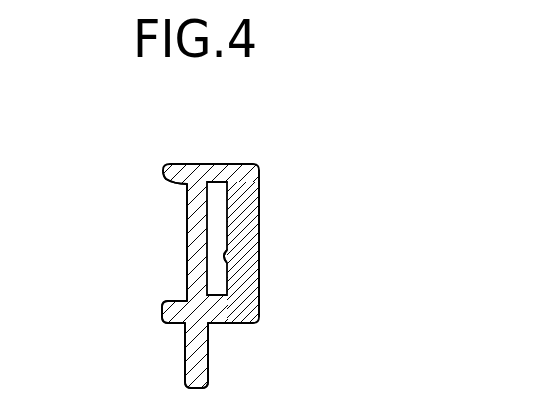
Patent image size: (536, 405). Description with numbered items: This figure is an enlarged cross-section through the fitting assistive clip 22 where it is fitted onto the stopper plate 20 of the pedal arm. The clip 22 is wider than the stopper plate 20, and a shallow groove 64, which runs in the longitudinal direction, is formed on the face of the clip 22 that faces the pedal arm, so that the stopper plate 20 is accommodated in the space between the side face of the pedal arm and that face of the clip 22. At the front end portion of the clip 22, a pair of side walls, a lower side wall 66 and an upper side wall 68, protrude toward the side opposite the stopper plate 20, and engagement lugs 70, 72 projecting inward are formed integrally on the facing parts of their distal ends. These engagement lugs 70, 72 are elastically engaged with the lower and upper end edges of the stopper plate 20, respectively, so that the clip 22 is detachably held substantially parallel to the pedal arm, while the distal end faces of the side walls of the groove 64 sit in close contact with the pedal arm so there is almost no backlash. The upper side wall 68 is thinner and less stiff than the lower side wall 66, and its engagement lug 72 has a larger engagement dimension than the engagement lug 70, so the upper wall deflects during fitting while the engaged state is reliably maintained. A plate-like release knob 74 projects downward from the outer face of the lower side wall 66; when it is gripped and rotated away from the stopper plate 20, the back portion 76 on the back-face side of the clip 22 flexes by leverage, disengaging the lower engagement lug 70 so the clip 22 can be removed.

The stopper plate 20 is at (187, 241).
The fitting assistive clip 22 is at (292, 177).
The groove 64 is at (243, 262).
The lower side wall 66 is at (214, 304).
The upper side wall 68 is at (204, 163).
The engagement lug 70 is at (183, 297).
The engagement lug 72 is at (183, 184).
The release knob 74 is at (185, 360).
The back portion 76 is at (259, 219).